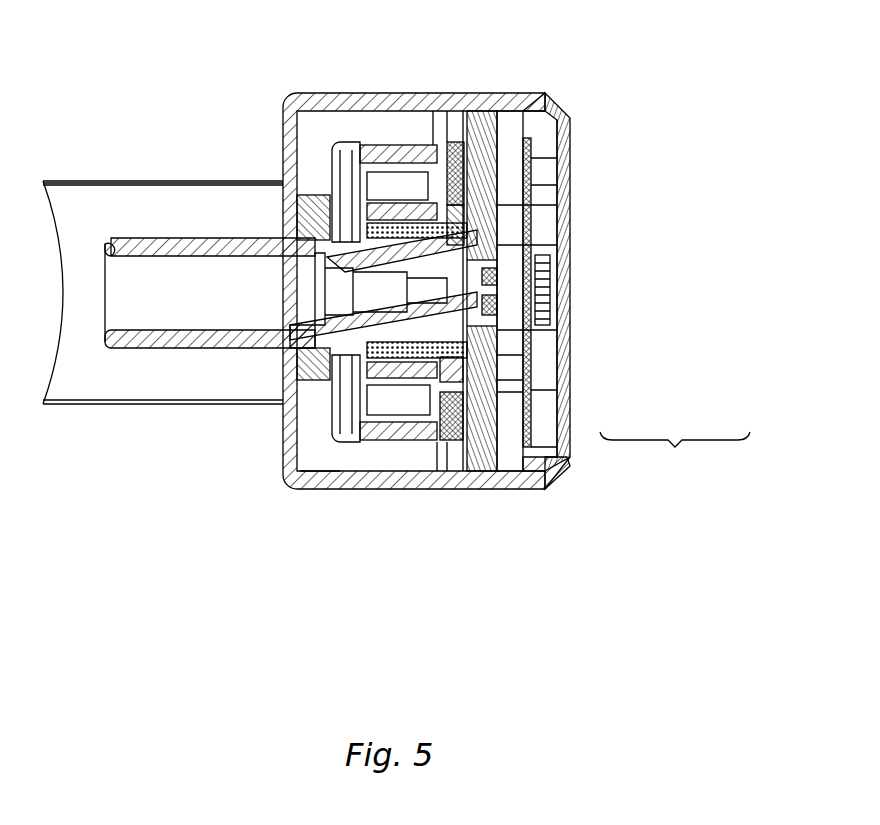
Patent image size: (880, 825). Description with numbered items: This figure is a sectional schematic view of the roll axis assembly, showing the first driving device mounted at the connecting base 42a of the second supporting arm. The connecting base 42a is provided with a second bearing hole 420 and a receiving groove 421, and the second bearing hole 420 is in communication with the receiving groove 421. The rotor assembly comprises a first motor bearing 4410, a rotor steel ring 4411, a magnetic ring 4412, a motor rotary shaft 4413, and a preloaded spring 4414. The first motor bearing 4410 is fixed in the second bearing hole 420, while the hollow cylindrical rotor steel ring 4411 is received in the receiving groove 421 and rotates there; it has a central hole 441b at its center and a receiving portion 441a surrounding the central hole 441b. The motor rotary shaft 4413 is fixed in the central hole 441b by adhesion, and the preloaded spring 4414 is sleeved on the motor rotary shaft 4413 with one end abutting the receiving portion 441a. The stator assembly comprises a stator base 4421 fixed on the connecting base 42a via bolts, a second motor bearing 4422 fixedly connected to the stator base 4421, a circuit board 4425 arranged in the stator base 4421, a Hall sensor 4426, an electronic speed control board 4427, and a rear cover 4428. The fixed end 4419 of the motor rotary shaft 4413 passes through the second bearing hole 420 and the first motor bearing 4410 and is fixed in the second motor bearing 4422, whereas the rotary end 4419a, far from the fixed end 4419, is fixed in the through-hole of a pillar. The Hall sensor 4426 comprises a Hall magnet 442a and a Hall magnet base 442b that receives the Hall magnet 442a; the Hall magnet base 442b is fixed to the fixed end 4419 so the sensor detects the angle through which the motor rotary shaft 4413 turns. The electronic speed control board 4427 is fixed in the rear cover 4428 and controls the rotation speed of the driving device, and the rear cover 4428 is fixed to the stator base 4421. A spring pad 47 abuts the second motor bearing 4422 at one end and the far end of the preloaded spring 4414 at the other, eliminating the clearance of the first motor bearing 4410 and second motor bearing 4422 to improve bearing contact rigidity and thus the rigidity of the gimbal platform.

The receiving groove 421 is at (318, 120).
The first motor bearing 4410 is at (281, 182).
The rotor steel ring 4411 is at (345, 135).
The magnetic ring 4412 is at (440, 140).
The circuit board 4425 is at (567, 115).
The stator base 4421 is at (497, 163).
The central hole 441b is at (497, 186).
The second motor bearing 4422 is at (560, 238).
The fixed end 4419 is at (562, 263).
The rotary end 4419a is at (115, 186).
The motor rotary shaft 4413 is at (170, 343).
The second bearing hole 420 is at (293, 353).
The connecting base 42a is at (308, 490).
The receiving portion 441a is at (368, 440).
The preloaded spring 4414 is at (395, 380).
The spring pad 47 is at (453, 442).
The Hall magnet base 442b is at (560, 343).
The Hall magnet 442a is at (540, 303).
The Hall sensor 4426 is at (675, 455).
The electronic speed control board 4427 is at (530, 427).
The rear cover 4428 is at (567, 430).